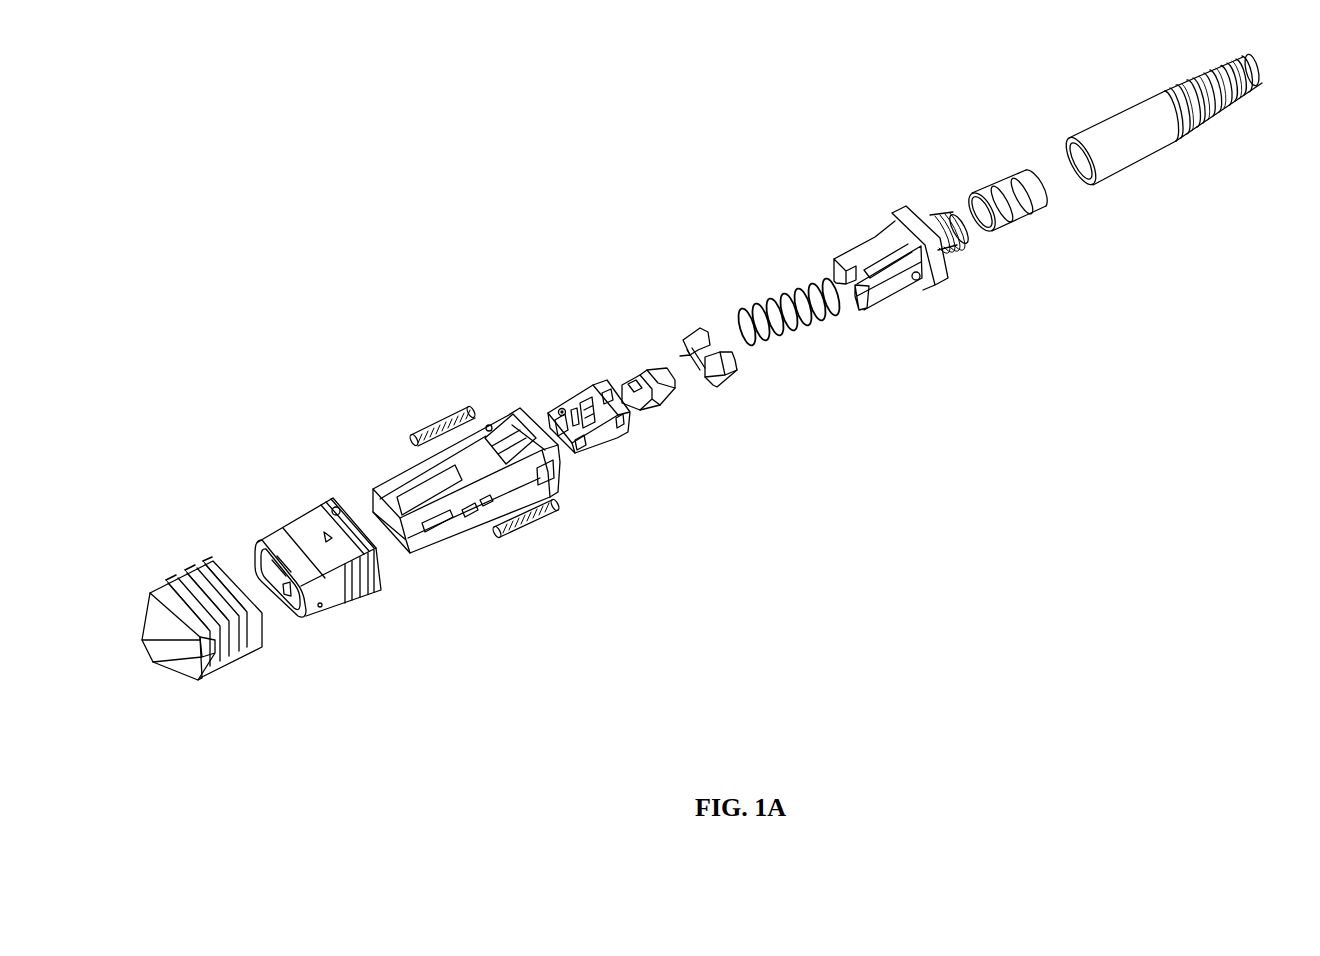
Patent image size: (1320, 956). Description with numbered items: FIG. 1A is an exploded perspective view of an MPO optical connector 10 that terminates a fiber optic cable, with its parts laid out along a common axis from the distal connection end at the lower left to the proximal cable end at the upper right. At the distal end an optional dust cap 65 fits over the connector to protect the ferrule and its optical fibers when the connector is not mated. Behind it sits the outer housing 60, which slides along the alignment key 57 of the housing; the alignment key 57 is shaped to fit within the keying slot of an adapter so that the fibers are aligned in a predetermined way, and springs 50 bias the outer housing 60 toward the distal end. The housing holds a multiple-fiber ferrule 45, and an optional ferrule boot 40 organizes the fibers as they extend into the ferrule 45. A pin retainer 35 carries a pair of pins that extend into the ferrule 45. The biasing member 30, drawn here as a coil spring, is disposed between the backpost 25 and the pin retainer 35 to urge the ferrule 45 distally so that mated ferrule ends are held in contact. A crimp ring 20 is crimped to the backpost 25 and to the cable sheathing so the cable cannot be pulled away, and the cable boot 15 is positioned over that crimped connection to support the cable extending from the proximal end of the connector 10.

The MPO connector 10 is at (486, 257).
The cable boot 15 is at (1128, 126).
The crimp ring 20 is at (1044, 177).
The backpost 25 is at (858, 250).
The biasing member 30 is at (784, 314).
The pin retainer 35 is at (700, 328).
The ferrule boot 40 is at (650, 374).
The ferrule 45 is at (606, 432).
The springs 50 is at (444, 420).
The alignment key 57 is at (408, 490).
The outer housing 60 is at (276, 538).
The dust cap 65 is at (212, 572).